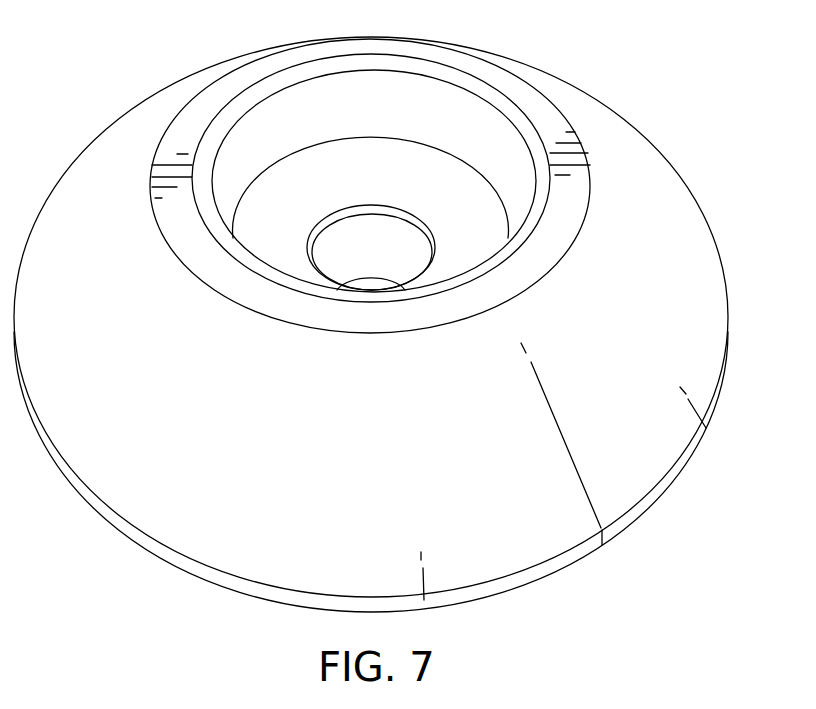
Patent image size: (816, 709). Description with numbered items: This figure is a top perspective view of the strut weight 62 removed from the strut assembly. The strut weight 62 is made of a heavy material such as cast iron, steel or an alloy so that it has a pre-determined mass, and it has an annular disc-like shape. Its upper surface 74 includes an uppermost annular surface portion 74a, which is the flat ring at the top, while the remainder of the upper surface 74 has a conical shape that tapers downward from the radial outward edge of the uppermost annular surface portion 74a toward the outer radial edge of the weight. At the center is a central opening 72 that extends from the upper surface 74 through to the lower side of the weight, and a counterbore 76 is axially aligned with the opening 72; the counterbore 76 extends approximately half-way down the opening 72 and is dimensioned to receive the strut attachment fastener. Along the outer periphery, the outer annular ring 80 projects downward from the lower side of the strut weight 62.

The strut weight 62 is at (650, 90).
The central opening 72 is at (383, 242).
The upper surface 74 is at (658, 230).
The uppermost annular surface portion 74a is at (512, 88).
The counterbore 76 is at (262, 138).
The outer annular ring 80 is at (641, 517).